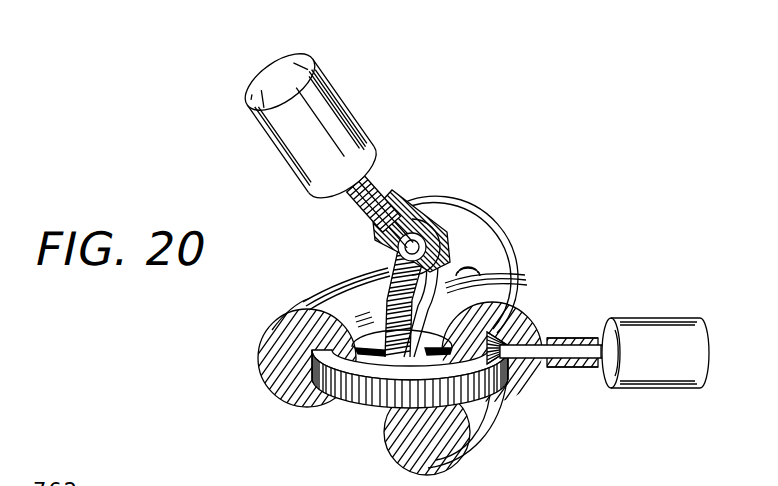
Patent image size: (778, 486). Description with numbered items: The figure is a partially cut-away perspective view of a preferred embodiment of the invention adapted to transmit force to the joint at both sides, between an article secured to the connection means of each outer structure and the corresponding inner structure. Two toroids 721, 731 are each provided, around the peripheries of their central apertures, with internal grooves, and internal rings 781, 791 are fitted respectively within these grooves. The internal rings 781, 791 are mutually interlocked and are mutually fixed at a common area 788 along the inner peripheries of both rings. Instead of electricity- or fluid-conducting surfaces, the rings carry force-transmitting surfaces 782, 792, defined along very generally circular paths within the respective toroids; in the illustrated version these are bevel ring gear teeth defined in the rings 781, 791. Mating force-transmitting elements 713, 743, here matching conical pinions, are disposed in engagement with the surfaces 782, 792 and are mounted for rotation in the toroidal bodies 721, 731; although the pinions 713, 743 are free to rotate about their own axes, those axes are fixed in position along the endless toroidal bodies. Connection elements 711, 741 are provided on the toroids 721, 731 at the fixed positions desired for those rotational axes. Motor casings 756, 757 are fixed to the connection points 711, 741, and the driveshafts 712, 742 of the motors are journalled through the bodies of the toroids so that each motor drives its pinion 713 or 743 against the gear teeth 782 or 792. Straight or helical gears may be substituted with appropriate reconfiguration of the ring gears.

The connection element 711 is at (570, 367).
The driveshaft 712 is at (584, 343).
The force-transmitting element 713 is at (540, 343).
The toroid 721 is at (300, 297).
The toroid 731 is at (483, 223).
The connection element 741 is at (390, 202).
The driveshaft 742 is at (358, 205).
The force-transmitting element 743 is at (428, 208).
The motor casing 756 is at (660, 363).
The motor casing 757 is at (327, 100).
The internal ring 781 is at (347, 407).
The force-transmitting surface 782 is at (373, 413).
The common area 788 is at (478, 318).
The internal ring 791 is at (380, 275).
The force-transmitting surface 792 is at (372, 310).